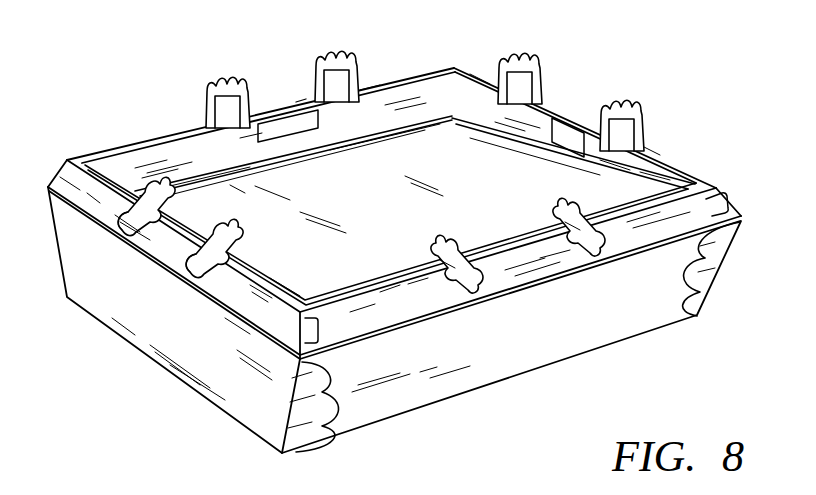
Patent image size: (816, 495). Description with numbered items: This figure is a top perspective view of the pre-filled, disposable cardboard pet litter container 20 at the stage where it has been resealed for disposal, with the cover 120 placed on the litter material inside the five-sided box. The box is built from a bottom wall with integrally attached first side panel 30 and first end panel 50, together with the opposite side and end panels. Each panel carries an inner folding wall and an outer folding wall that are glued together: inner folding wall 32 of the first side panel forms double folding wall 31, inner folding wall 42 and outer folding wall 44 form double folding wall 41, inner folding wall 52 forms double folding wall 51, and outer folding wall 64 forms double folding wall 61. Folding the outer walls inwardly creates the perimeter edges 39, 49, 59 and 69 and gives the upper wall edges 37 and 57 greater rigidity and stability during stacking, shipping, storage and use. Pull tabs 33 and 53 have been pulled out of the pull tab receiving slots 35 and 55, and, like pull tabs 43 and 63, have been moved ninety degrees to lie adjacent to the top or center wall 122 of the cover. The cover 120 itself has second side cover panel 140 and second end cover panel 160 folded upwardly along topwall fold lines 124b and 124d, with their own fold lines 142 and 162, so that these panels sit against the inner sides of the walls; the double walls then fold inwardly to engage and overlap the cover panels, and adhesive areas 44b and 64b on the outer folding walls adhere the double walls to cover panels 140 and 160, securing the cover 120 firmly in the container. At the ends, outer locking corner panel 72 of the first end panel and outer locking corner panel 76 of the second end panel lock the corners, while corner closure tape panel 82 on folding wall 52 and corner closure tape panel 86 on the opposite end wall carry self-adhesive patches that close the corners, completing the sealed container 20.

The pet litter container 20 is at (404, 246).
The first side panel 30 is at (517, 353).
The double folding wall 31 is at (416, 278).
The inner folding wall 32 is at (540, 263).
The pull tabs 33 is at (429, 240).
The pull tab receiving slots 35 is at (487, 257).
The upper wall edge 37 is at (365, 332).
The perimeter edge 39 is at (389, 287).
The double folding wall 41 is at (366, 83).
The inner folding wall 42 is at (452, 118).
The pull tabs 43 is at (238, 74).
The outer folding wall 44 is at (312, 104).
The adhesive area 44b is at (300, 98).
The perimeter edge 49 is at (193, 131).
The first end panel 50 is at (140, 290).
The double folding wall 51 is at (108, 176).
The inner folding wall 52 is at (64, 164).
The pull tabs 53 is at (181, 186).
The pull tab receiving slots 55 is at (115, 228).
The upper wall edge 57 is at (248, 310).
The perimeter edge 59 is at (268, 248).
The double folding wall 61 is at (645, 142).
The pull tabs 63 is at (523, 64).
The outer folding wall 64 is at (655, 175).
The adhesive area 64b is at (572, 133).
The perimeter edge 69 is at (480, 72).
The outer locking corner panel 72 is at (295, 423).
The outer locking corner panel 76 is at (724, 247).
The corner closure tape panel 82 is at (318, 324).
The corner closure tape panel 86 is at (726, 203).
The cover 120 is at (237, 192).
The top or center wall 122 is at (340, 210).
The topwall fold line 124b is at (347, 148).
The topwall fold line 124d is at (544, 177).
The second side cover panel 140 is at (325, 133).
The fold lines 142 is at (272, 181).
The second end cover panel 160 is at (619, 180).
The fold lines 162 is at (513, 141).